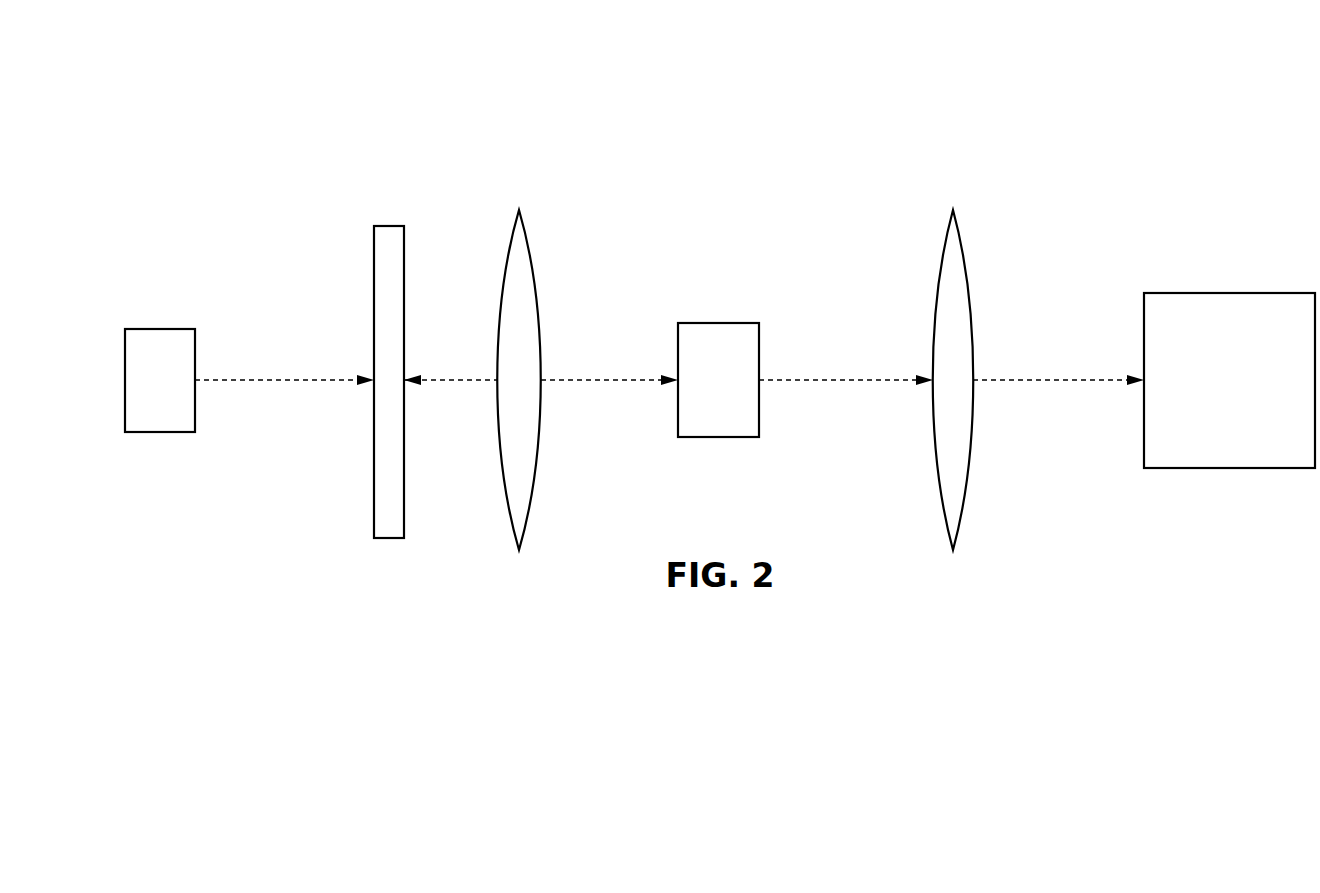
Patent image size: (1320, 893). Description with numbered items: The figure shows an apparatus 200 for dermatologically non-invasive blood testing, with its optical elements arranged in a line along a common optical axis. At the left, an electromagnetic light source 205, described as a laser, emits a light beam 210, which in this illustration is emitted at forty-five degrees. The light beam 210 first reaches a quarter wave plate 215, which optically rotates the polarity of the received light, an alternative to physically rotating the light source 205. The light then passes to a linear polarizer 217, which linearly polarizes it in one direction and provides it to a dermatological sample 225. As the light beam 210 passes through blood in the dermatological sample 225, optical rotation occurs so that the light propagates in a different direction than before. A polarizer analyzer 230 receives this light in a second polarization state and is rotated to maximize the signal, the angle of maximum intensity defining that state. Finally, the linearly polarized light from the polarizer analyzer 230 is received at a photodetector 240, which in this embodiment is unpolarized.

The apparatus 200 is at (222, 66).
The electromagnetic light source 205 is at (160, 328).
The light beam 210 is at (280, 379).
The quarter wave plate 215 is at (374, 262).
The linear polarizer 217 is at (533, 255).
The dermatological sample 225 is at (719, 322).
The polarizer analyzer 230 is at (938, 262).
The photodetector 240 is at (1220, 292).